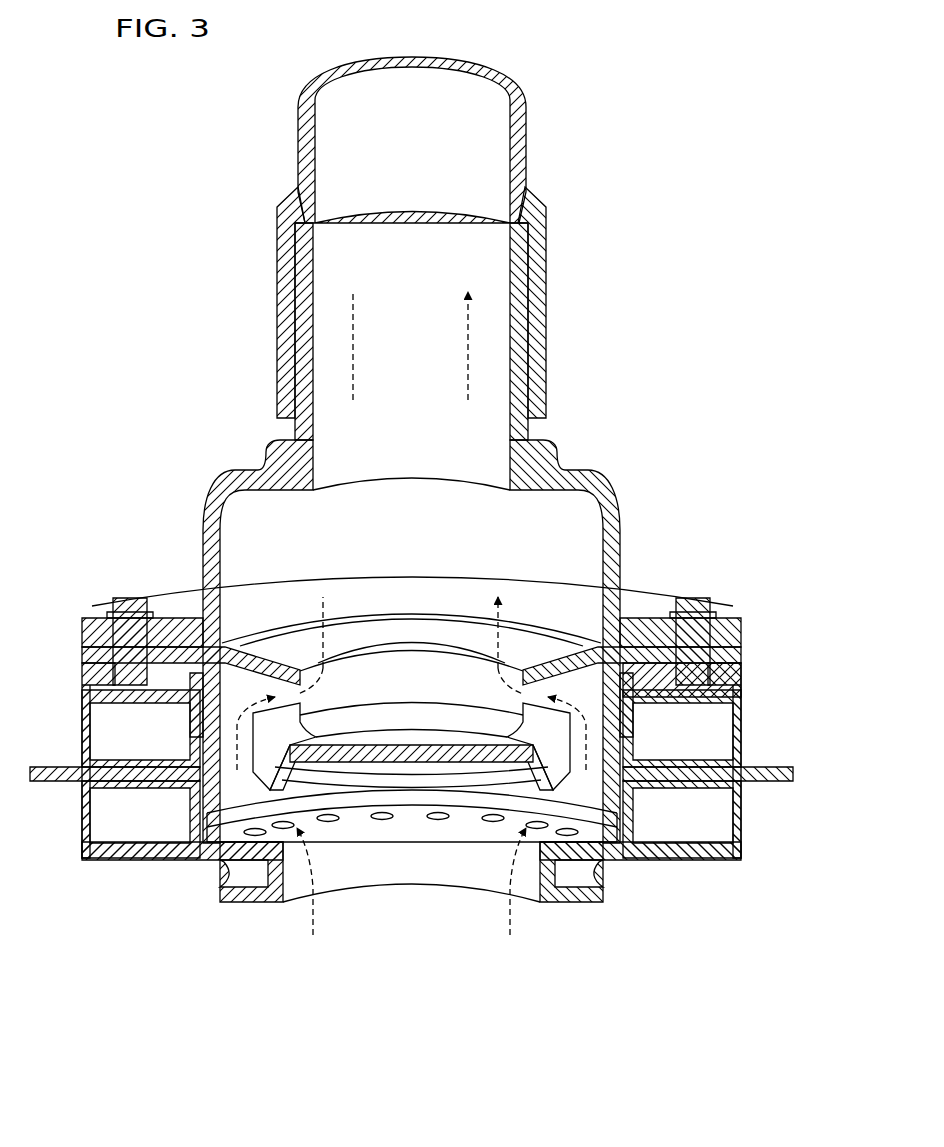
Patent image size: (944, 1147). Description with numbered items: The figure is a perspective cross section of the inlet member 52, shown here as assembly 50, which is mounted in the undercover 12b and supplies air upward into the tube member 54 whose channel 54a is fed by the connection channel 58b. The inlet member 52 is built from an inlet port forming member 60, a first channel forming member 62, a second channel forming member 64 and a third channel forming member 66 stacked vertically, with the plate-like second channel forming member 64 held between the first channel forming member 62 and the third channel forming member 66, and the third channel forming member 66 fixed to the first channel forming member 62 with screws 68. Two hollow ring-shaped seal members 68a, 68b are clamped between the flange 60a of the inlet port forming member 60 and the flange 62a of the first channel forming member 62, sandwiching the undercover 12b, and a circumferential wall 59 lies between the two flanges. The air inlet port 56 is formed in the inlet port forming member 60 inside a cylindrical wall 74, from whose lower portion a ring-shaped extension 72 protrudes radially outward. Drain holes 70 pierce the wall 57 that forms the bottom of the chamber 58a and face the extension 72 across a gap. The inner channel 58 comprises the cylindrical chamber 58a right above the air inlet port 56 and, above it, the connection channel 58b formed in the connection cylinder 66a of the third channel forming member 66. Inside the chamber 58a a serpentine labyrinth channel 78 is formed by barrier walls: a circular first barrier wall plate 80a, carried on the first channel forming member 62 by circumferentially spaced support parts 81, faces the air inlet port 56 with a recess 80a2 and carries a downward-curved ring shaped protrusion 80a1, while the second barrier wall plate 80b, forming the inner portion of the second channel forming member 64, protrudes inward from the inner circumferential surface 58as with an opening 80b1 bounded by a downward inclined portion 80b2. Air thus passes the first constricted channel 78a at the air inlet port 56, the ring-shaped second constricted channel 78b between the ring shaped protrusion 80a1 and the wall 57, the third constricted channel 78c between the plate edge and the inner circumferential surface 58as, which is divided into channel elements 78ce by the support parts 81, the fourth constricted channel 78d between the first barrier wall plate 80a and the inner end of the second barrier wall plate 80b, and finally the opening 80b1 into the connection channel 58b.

The purge nozzle 50 is at (199, 90).
The inlet member 52 is at (195, 408).
The tube member 54 is at (528, 148).
The channel 54a is at (330, 178).
The air inlet port 56 is at (463, 850).
The wall 57 is at (208, 851).
The inner channel 58 is at (250, 513).
The chamber 58a is at (583, 497).
The inner circumferential surface 58as is at (621, 736).
The connection channel 58b is at (490, 360).
The circumferential wall 59 is at (627, 814).
The inlet port forming member 60 is at (686, 866).
The flange 60a is at (718, 866).
The first channel forming member 62 is at (80, 666).
The flange 62a is at (737, 681).
The second channel forming member 64 is at (256, 643).
The third channel forming member 66 is at (207, 512).
The connection cylinder 66a is at (290, 330).
The screws 68 is at (130, 603).
The seal member 68a is at (741, 846).
The seal member 68b is at (737, 721).
The drain holes 70 is at (385, 822).
The extension 72 is at (590, 905).
The cylindrical wall 74 is at (545, 866).
The labyrinth channel 78 is at (233, 688).
The first constricted channel 78a is at (411, 767).
The second constricted channel 78b is at (193, 802).
The third constricted channel 78c is at (200, 768).
The channel elements 78ce is at (447, 683).
The fourth constricted channel 78d is at (534, 670).
The first barrier wall plate 80a is at (400, 735).
The ring shaped protrusion 80a1 is at (293, 802).
The recess 80a2 is at (430, 806).
The second barrier wall plate 80b is at (374, 630).
The opening 80b1 is at (344, 657).
The inclined portion 80b2 is at (519, 636).
The support parts 81 is at (345, 711).
The undercover 12b is at (778, 795).